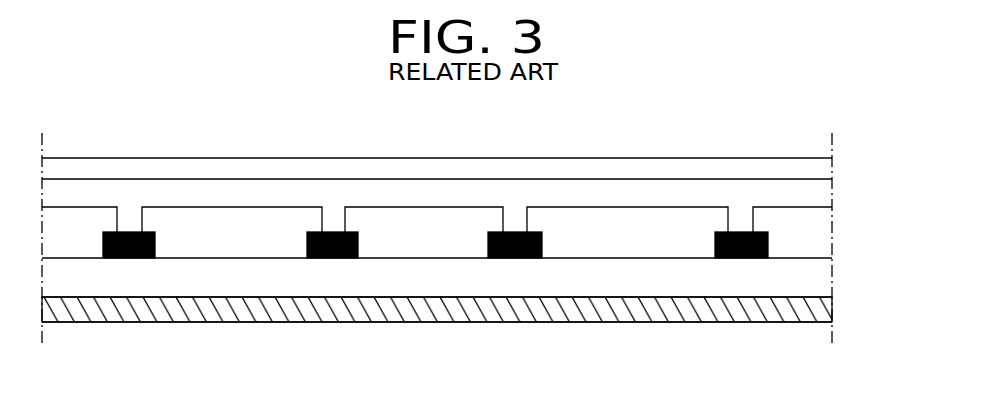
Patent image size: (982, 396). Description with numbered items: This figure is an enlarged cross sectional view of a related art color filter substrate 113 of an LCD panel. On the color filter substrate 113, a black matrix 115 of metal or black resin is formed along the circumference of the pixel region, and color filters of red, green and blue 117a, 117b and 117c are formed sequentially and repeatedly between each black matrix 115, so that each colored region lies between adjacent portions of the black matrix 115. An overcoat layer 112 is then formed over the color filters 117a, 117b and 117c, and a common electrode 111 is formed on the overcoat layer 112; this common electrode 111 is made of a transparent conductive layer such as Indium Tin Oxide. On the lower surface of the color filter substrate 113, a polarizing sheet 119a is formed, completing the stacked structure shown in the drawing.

The common electrode 111 is at (818, 173).
The overcoat layer 112 is at (818, 199).
The color filter substrate 113 is at (818, 283).
The black matrix 115 is at (768, 245).
The red color filter 117a is at (243, 230).
The green color filter 117b is at (460, 233).
The blue color filter 117c is at (672, 233).
The polarizing sheet 119a is at (818, 316).